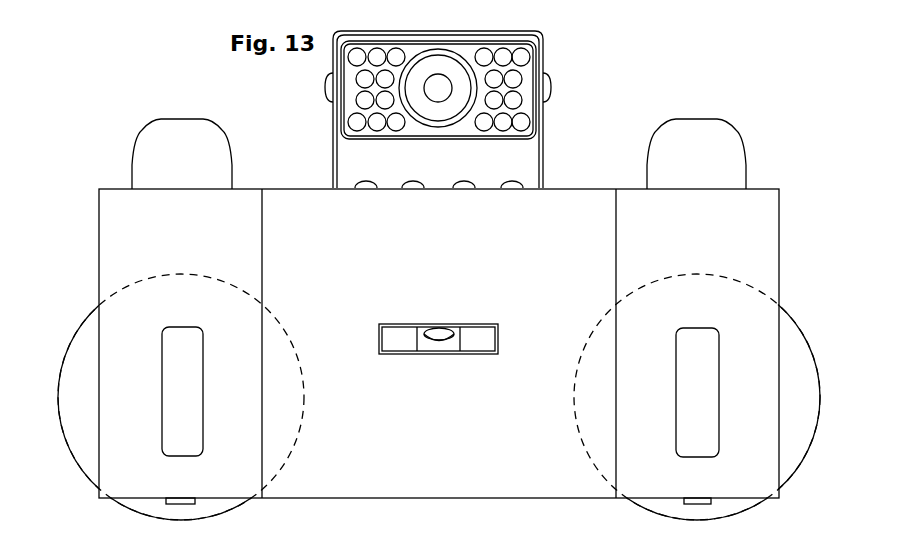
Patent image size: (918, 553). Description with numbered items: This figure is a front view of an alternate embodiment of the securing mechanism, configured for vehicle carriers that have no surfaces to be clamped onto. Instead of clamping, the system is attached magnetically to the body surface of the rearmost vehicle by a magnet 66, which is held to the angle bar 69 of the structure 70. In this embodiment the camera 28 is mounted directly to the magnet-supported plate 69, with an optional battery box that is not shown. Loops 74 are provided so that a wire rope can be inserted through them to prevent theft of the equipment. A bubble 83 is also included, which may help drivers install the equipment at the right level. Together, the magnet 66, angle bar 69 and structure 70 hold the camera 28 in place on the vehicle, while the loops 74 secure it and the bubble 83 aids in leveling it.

The camera 28 is at (528, 68).
The magnet 66 is at (87, 403).
The angle bar 69 is at (315, 210).
The structure 70 is at (182, 130).
The loops 74 is at (173, 342).
The bubble 83 is at (487, 347).